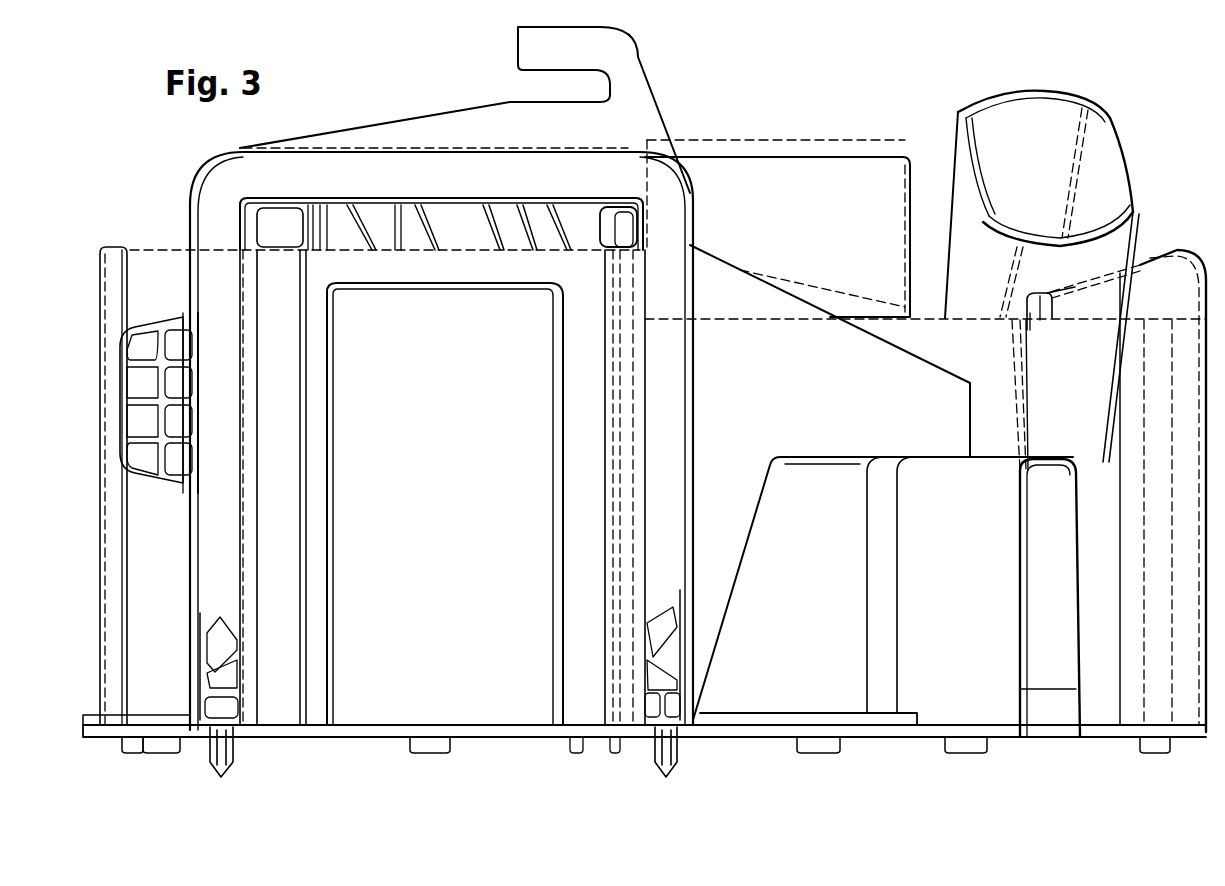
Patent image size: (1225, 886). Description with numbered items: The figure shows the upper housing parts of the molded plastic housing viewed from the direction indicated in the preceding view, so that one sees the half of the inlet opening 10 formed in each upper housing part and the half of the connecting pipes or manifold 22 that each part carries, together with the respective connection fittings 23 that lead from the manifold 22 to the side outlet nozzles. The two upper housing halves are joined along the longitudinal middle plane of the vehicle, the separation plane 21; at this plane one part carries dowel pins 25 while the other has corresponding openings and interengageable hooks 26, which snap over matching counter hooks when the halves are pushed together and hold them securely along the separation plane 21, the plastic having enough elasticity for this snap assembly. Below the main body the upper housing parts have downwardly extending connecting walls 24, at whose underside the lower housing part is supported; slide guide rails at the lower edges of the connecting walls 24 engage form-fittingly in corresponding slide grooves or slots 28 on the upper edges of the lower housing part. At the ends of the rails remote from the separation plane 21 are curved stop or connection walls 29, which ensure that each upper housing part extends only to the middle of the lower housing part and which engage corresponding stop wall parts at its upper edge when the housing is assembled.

The inlet opening 10 is at (494, 532).
The separation plane 21 is at (60, 727).
The connecting pipes or manifold 22 is at (944, 462).
The connection fittings 23 is at (1103, 155).
The connecting walls 24 is at (1165, 252).
The dowel pins 25 is at (237, 750).
The interengageable hooks 26 is at (450, 742).
The slide grooves or slots 28 is at (1018, 417).
The curved stop or connection walls 29 is at (1037, 293).